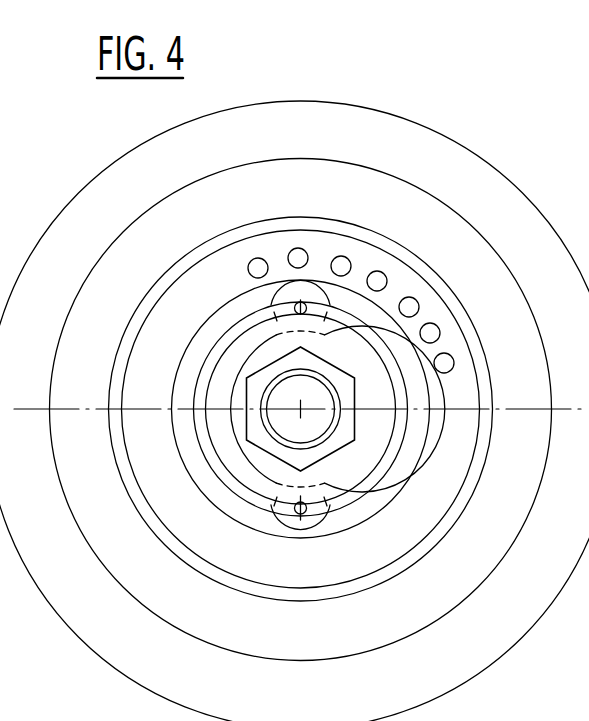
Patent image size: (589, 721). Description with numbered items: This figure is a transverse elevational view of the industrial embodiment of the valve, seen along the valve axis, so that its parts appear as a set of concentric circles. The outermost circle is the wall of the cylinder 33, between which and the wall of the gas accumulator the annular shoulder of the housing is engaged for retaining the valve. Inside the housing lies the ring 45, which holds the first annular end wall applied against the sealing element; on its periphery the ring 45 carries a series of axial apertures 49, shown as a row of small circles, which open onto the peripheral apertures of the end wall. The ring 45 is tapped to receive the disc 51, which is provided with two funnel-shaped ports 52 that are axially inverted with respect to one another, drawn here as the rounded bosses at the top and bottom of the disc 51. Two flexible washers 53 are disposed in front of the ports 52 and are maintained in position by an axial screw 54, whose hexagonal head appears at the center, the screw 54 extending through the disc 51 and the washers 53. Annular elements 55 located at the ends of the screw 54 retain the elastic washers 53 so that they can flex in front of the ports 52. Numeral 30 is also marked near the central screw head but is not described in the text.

The cylinder 33 is at (427, 135).
The ring 45 is at (462, 354).
The axial apertures 49 is at (347, 255).
The disc 51 is at (403, 475).
The funnel-shaped ports 52 is at (283, 300).
The flexible washers 53 is at (397, 437).
The axial screw 54 is at (323, 393).
The annular elements 55 is at (247, 470).
The nut 30 is at (343, 430).